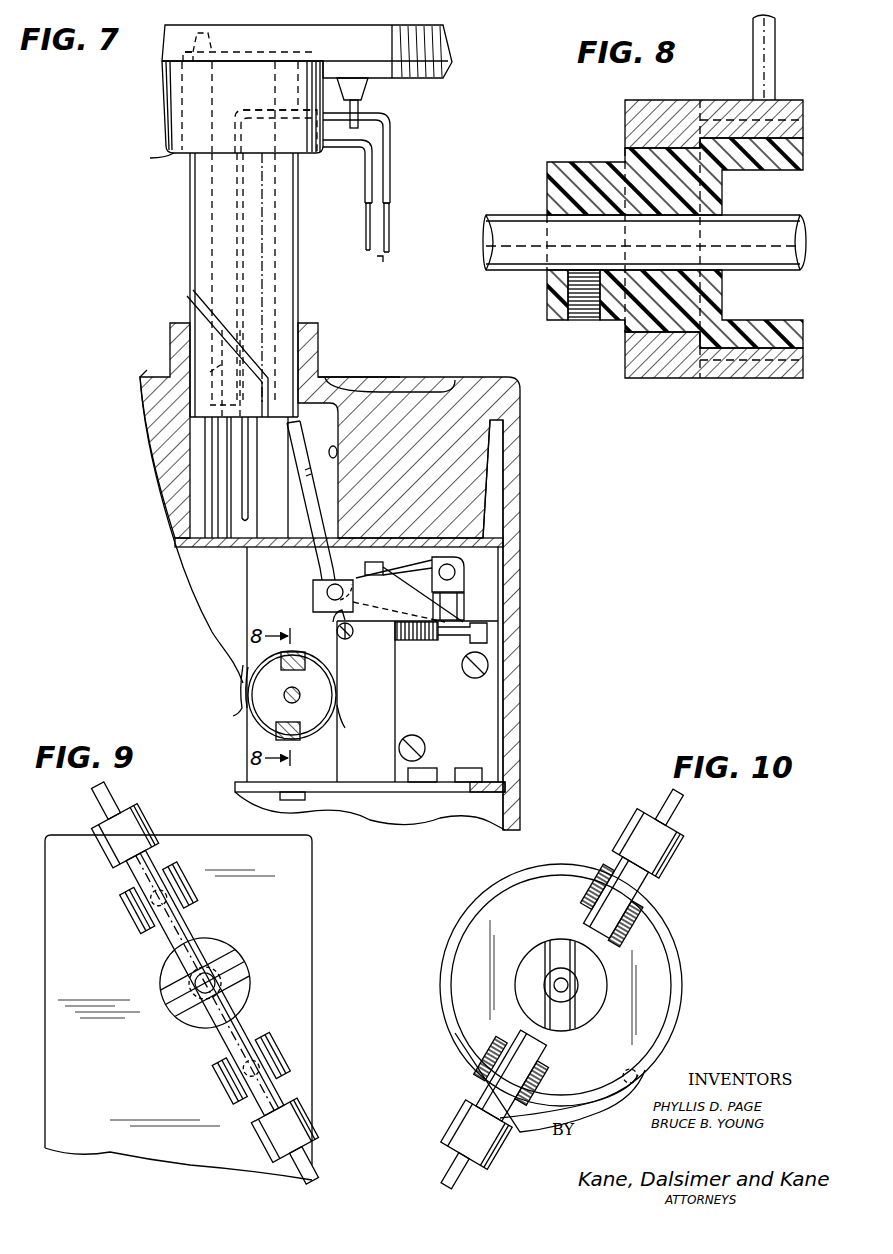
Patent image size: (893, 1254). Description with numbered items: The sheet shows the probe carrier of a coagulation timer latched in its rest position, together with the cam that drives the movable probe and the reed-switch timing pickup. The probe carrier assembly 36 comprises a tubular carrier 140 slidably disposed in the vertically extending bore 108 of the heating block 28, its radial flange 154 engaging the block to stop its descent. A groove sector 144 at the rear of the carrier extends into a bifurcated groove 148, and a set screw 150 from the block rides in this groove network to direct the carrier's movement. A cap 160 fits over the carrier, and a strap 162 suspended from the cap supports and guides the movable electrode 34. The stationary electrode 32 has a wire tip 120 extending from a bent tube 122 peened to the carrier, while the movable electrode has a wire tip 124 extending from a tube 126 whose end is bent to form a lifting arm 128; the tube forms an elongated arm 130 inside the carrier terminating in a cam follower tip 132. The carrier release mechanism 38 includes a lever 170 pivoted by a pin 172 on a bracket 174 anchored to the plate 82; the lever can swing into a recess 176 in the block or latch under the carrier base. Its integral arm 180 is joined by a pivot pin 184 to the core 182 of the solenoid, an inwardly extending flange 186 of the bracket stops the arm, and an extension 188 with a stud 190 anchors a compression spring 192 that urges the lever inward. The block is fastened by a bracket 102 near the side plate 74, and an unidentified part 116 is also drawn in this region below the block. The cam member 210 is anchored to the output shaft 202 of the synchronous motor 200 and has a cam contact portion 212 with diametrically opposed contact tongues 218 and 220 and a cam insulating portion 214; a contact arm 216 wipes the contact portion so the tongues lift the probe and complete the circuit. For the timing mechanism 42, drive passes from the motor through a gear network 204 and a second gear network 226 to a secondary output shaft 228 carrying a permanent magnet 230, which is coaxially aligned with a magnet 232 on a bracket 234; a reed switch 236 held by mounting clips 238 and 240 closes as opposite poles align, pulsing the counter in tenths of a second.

In FIG. 7, the cap 160 is at (410, 28).
In FIG. 7, the probe carrier assembly 36 is at (158, 107).
In FIG. 7, the radial flange 154 is at (149, 170).
In FIG. 7, the groove sector 144 is at (192, 228).
In FIG. 7, the strap 162 is at (358, 110).
In FIG. 7, the tube 126 is at (391, 127).
In FIG. 7, the tube 122 is at (366, 160).
In FIG. 7, the stationary electrode 32 is at (361, 212).
In FIG. 7, the movable electrode 34 is at (393, 187).
In FIG. 7, the wire tip 120 is at (364, 233).
In FIG. 7, the wire tip 124 is at (390, 233).
In FIG. 7, the lifting arm 128 is at (384, 262).
In FIG. 7, the bifurcated groove 148 is at (205, 314).
In FIG. 7, the vertically extending bore 108 is at (197, 365).
In FIG. 7, the set screw 150 is at (217, 381).
In FIG. 7, the tubular carrier 140 is at (293, 295).
In FIG. 7, the heating block 28 is at (340, 367).
In FIG. 7, the recess 176 is at (340, 452).
In FIG. 7, the lever 170 is at (295, 426).
In FIG. 7, the elongated arm 130 is at (250, 450).
In FIG. 7, the cam follower tip 132 is at (266, 530).
In FIG. 7, the side plate 74 is at (510, 490).
In FIG. 7, the partition plate 116 is at (500, 545).
In FIG. 7, the bracket 102 is at (250, 577).
In FIG. 7, the pin 172 is at (318, 592).
In FIG. 7, the inwardly extending flange 186 is at (384, 560).
In FIG. 7, the arm 180 is at (435, 562).
In FIG. 7, the pivot pin 184 is at (455, 572).
In FIG. 7, the core 182 is at (464, 596).
In FIG. 7, the extension 188 is at (330, 622).
In FIG. 7, the carrier release mechanism 38 is at (493, 620).
In FIG. 7, the cam member 210 is at (252, 666).
In FIG. 8, the cam member 210 is at (592, 146).
In FIG. 7, the electrical contact tongue 218 is at (313, 651).
In FIG. 8, the electrical contact tongue 218 is at (805, 118).
In FIG. 7, the contact arm 216 is at (237, 692).
In FIG. 7, the output shaft 202 is at (312, 702).
In FIG. 8, the output shaft 202 is at (752, 271).
In FIG. 7, the electrical contact tongue 220 is at (300, 741).
In FIG. 8, the electrical contact tongue 220 is at (800, 372).
In FIG. 7, the cam contact portion 212 is at (342, 722).
In FIG. 8, the cam contact portion 212 is at (643, 378).
In FIG. 7, the stud 190 is at (358, 640).
In FIG. 7, the compression spring 192 is at (414, 642).
In FIG. 7, the bracket 174 is at (394, 722).
In FIG. 7, the plate 82 is at (384, 787).
In FIG. 8, the cam insulating portion 214 is at (605, 320).
In FIG. 9, the timing mechanism 42 is at (181, 853).
In FIG. 9, the mounting clip 238 is at (125, 908).
In FIG. 10, the mounting clip 238 is at (580, 886).
In FIG. 9, the reed switch 236 is at (158, 943).
In FIG. 10, the reed switch 236 is at (642, 884).
In FIG. 9, the bracket 234 is at (313, 971).
In FIG. 9, the magnet 232 is at (190, 1016).
In FIG. 9, the mounting clip 240 is at (232, 1086).
In FIG. 10, the mounting clip 240 is at (492, 1058).
In FIG. 10, the synchronous motor 200 is at (466, 912).
In FIG. 10, the second gear network 226 is at (453, 975).
In FIG. 10, the secondary output shaft 228 is at (552, 985).
In FIG. 10, the permanent magnet 230 is at (601, 960).
In FIG. 10, the gear network 204 is at (466, 1090).